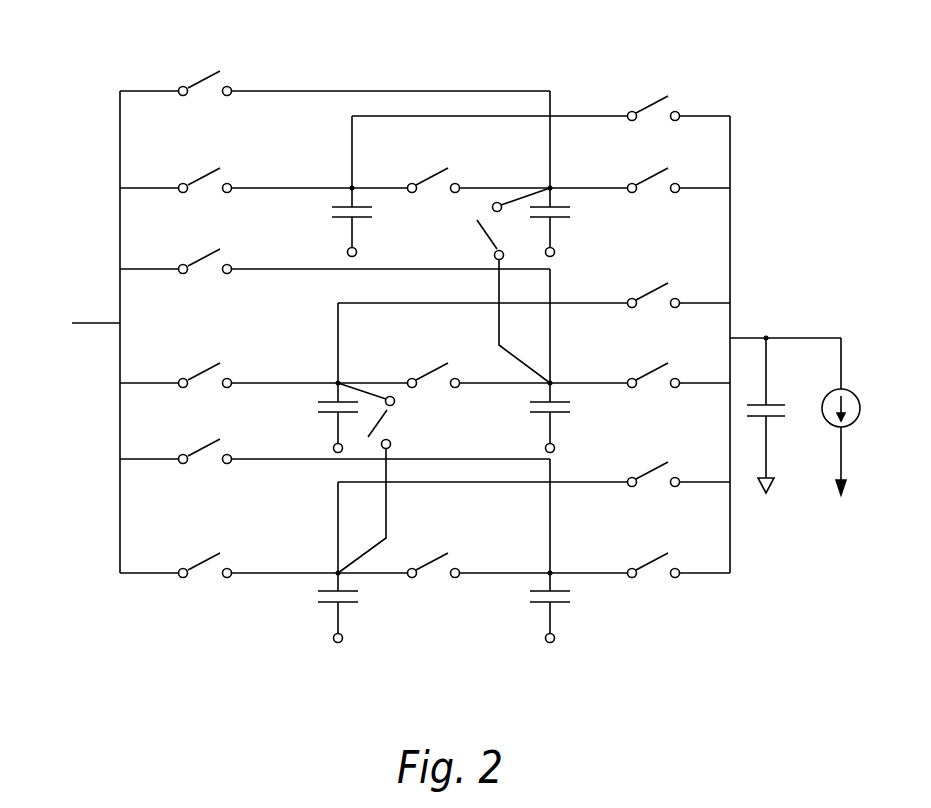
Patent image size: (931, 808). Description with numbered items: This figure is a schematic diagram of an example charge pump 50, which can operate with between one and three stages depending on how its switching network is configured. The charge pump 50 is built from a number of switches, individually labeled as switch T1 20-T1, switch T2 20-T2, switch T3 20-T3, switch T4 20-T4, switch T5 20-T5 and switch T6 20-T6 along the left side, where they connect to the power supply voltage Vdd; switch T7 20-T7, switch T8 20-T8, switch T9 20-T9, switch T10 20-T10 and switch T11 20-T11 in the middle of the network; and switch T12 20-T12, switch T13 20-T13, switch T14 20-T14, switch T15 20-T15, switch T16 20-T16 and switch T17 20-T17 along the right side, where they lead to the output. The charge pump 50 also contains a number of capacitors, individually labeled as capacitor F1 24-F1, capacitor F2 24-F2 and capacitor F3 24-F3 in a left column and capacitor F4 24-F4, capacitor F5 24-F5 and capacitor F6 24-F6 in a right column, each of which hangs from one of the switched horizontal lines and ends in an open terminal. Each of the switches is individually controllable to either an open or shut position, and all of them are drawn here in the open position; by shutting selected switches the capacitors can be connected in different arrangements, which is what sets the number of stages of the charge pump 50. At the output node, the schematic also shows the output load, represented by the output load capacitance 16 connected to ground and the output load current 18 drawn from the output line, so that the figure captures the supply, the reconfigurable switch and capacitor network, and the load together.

The charge pump 50 is at (108, 84).
The output load capacitance 16 is at (777, 406).
The output load current 18 is at (855, 422).
The switch T1 20-T1 is at (209, 63).
The switch T2 20-T2 is at (209, 159).
The switch T3 20-T3 is at (209, 240).
The switch T4 20-T4 is at (209, 355).
The switch T5 20-T5 is at (209, 431).
The switch T6 20-T6 is at (209, 544).
The switch T7 20-T7 is at (438, 160).
The switch T8 20-T8 is at (485, 285).
The switch T9 20-T9 is at (438, 356).
The switch T10 20-T10 is at (407, 478).
The switch T11 20-T11 is at (443, 544).
The switch T12 20-T12 is at (664, 89).
The switch T13 20-T13 is at (664, 161).
The switch T14 20-T14 is at (664, 276).
The switch T15 20-T15 is at (664, 356).
The switch T16 20-T16 is at (664, 455).
The switch T17 20-T17 is at (664, 544).
The capacitor F1 24-F1 is at (372, 222).
The capacitor F2 24-F2 is at (315, 418).
The capacitor F3 24-F3 is at (306, 611).
The capacitor F4 24-F4 is at (571, 222).
The capacitor F5 24-F5 is at (530, 418).
The capacitor F6 24-F6 is at (577, 611).